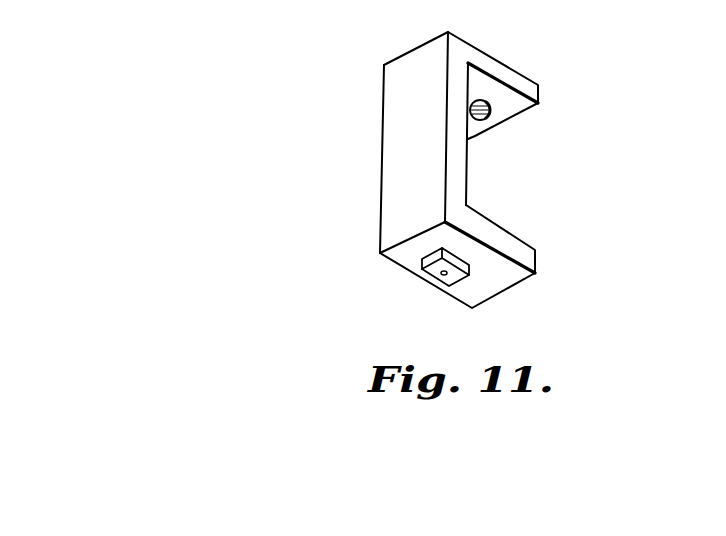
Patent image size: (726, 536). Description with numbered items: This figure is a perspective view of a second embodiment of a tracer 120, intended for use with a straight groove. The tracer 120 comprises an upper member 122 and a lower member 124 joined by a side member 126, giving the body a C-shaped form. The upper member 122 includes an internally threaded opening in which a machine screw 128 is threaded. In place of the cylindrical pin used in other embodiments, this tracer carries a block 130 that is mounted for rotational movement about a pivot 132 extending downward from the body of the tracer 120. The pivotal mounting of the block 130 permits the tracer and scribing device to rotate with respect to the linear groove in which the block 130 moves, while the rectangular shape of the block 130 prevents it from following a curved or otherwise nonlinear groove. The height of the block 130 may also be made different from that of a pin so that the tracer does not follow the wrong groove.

The tracer 120 is at (376, 121).
The upper member 122 is at (498, 68).
The lower member 124 is at (527, 250).
The side member 126 is at (397, 191).
The machine screw 128 is at (487, 119).
The block 130 is at (453, 278).
The pivot 132 is at (442, 275).